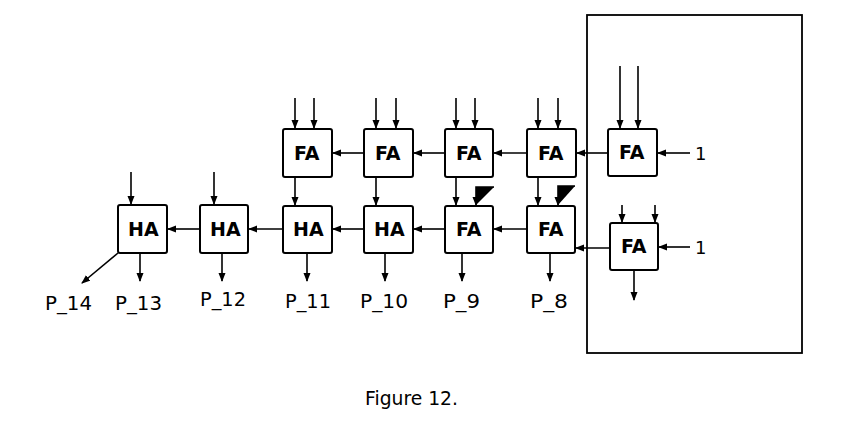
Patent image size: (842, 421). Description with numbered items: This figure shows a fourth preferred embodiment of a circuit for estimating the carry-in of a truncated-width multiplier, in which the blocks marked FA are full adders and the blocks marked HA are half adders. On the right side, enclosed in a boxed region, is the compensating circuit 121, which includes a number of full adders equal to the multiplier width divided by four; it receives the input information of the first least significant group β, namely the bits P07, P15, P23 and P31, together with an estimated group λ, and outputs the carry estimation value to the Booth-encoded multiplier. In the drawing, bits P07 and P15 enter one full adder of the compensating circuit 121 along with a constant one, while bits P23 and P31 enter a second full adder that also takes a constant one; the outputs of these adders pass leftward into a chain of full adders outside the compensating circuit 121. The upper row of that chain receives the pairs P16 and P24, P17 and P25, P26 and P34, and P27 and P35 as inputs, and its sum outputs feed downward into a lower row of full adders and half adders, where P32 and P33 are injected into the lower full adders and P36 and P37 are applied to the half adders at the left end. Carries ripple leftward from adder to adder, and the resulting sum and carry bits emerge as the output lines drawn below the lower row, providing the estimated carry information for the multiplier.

The compensating circuit 121 is at (694, 200).
The information included in the first least significant group β P07 is at (613, 87).
The information included in the first least significant group β P15 is at (651, 87).
The partial product bit P16 is at (536, 103).
The partial product bit P17 is at (453, 103).
The information included in the first least significant group β P23 is at (627, 203).
The partial product bit P24 is at (574, 103).
The partial product bit P25 is at (489, 103).
The partial product bit P26 is at (368, 103).
The partial product bit P27 is at (286, 103).
The information included in the first least significant group β P31 is at (663, 203).
The partial product bit P32 is at (584, 193).
The partial product bit P33 is at (502, 193).
The partial product bit P34 is at (406, 103).
The partial product bit P35 is at (324, 103).
The partial product bit P36 is at (217, 178).
The partial product bit P37 is at (125, 178).